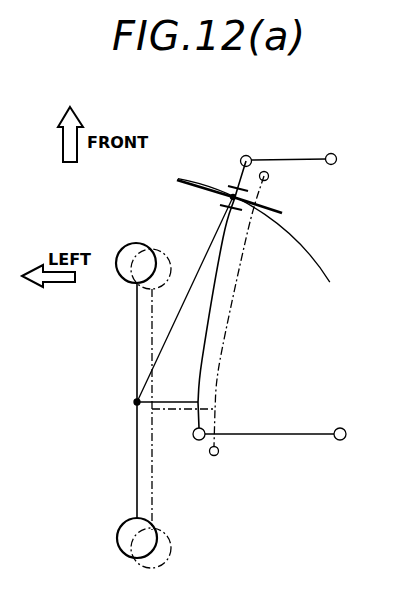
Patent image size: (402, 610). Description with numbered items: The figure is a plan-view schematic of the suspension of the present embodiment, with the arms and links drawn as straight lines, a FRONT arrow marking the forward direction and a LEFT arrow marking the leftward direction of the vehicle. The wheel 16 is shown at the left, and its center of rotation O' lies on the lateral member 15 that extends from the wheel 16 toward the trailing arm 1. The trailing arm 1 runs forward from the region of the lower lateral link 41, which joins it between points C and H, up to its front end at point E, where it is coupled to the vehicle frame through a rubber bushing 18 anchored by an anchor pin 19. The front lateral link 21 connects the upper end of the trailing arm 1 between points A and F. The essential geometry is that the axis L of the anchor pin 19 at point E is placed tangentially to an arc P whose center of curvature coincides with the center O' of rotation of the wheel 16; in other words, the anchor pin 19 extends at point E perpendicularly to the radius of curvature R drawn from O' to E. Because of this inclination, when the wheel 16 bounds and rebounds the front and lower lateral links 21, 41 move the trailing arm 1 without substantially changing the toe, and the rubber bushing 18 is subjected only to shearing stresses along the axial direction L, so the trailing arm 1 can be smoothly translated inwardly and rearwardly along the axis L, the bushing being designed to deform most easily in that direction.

The trailing arm 1 is at (203, 346).
The tie rod 15 is at (167, 406).
The wheel 16 is at (137, 338).
The rubber bushing 18 is at (222, 201).
The anchor pin 19 is at (192, 177).
The front lateral link 21 is at (291, 159).
The lower lateral link 41 is at (276, 436).
The point A is at (246, 155).
The point F is at (336, 156).
The coupling point E is at (229, 194).
The point C is at (199, 441).
The point H is at (340, 441).
The axis of the anchor pin L is at (278, 210).
The arc P is at (327, 262).
The radius of curvature R is at (185, 299).
The center of rotation of the wheel O' is at (112, 421).